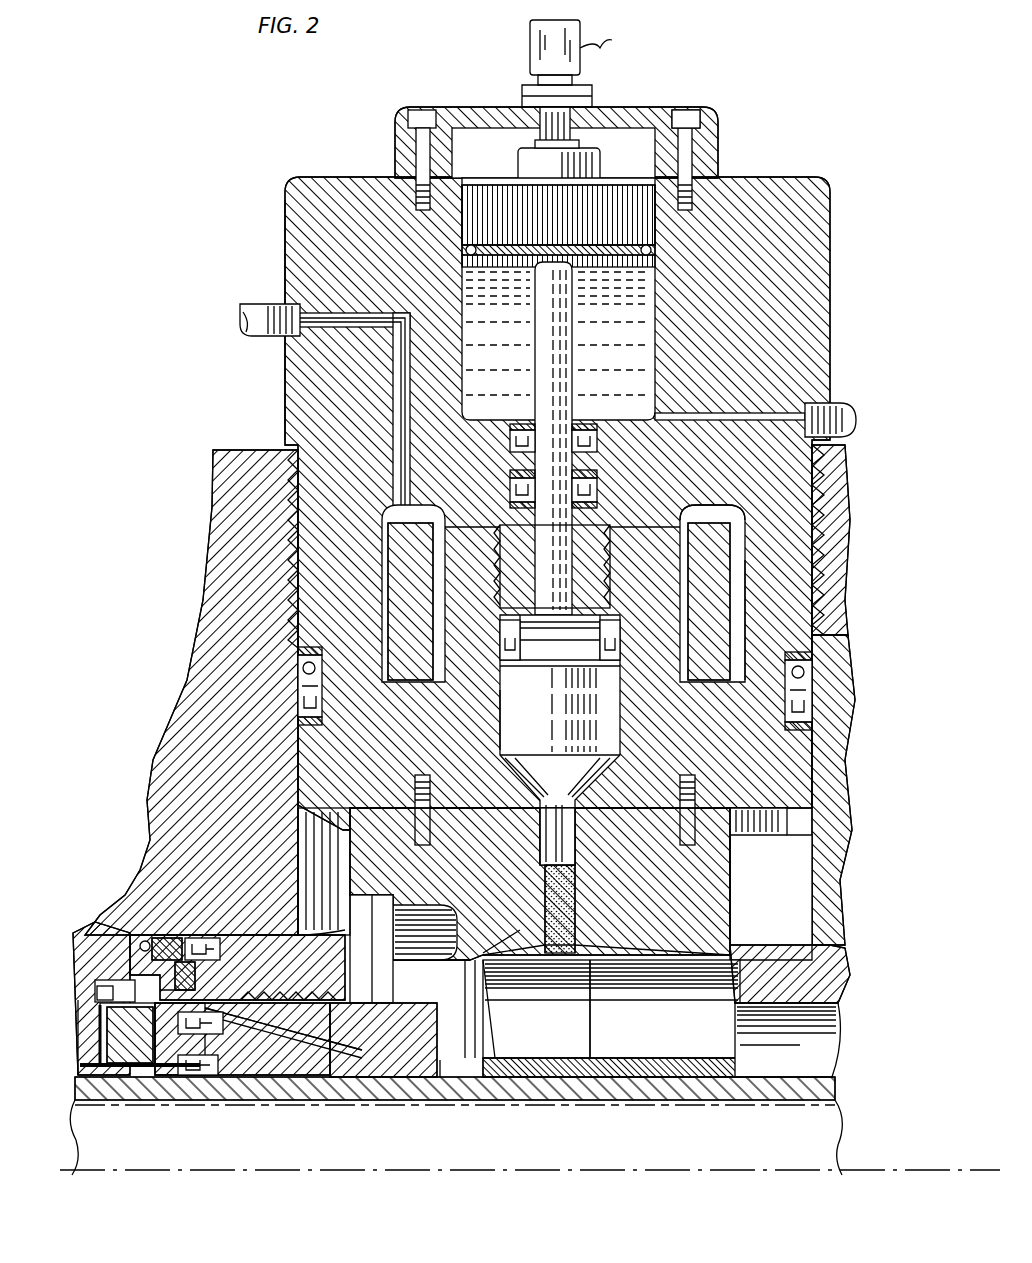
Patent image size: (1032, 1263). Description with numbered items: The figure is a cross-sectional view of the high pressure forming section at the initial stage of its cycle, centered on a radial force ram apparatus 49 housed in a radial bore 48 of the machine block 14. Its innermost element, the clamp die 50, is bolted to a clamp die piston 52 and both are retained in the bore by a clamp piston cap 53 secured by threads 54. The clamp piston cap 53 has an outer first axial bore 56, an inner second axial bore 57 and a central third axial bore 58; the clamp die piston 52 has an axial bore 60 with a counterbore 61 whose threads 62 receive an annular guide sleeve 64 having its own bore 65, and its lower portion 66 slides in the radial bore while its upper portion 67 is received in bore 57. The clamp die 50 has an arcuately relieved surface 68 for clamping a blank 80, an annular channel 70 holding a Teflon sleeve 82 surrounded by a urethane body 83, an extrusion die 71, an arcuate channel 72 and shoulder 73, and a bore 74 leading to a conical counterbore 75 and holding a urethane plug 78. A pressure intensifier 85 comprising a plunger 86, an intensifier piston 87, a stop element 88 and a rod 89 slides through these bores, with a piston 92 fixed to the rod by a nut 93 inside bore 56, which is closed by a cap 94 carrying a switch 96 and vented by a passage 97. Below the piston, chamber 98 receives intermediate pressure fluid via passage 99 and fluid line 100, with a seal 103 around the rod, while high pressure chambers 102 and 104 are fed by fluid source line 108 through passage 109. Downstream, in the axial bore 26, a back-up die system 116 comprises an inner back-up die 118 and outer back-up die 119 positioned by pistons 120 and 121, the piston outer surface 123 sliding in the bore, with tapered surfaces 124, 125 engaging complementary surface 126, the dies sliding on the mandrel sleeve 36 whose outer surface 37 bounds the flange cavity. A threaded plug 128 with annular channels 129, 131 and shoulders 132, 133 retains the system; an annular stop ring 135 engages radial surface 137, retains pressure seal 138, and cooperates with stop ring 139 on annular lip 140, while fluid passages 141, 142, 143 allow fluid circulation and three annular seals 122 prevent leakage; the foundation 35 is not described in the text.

The machine block 14 is at (836, 505).
The axial bore 26 is at (840, 958).
The foundation 35 is at (614, 1154).
The mandrel sleeve 36 is at (835, 1088).
The outer surface of mandrel sleeve 37 is at (440, 1082).
The radial bore 48 is at (814, 880).
The radial force ram apparatus 49 is at (264, 152).
The clamp die 50 is at (712, 926).
The clamp die piston 52 is at (772, 835).
The clamp piston cap 53 is at (292, 246).
The threads 54 is at (295, 448).
The outer first axial bore 56 is at (668, 376).
The inner second axial bore 57 is at (745, 625).
The third axial bore 58 is at (532, 470).
The axial bore 60 is at (505, 685).
The axial counterbore 61 is at (612, 600).
The threads 62 is at (616, 548).
The annular guide sleeve 64 is at (495, 598).
The axial bore of guide sleeve 65 is at (500, 535).
The lower portion of clamp die piston 66 is at (800, 752).
The upper portion of clamp die piston 67 is at (720, 577).
The arcuately relieved surface 68 is at (690, 985).
The annular channel 70 is at (612, 975).
The extrusion die 71 is at (462, 975).
The arcuate channel 72 is at (393, 922).
The shoulder 73 is at (448, 948).
The bore 74 is at (590, 936).
The conical counterbore 75 is at (578, 820).
The plug 78 is at (566, 900).
The blank 80 is at (806, 1075).
The cylindrical sleeve 82 is at (560, 1066).
The cylindrical body 83 is at (505, 955).
The pressure intensifier 85 is at (486, 716).
The plunger 86 is at (548, 830).
The intensifier piston 87 is at (542, 726).
The stop element 88 is at (610, 630).
The rod 89 is at (550, 382).
The piston 92 is at (528, 216).
The nut 93 is at (598, 165).
The cap 94 is at (472, 108).
The switch 96 is at (530, 48).
The passage 97 is at (628, 112).
The chamber 98 is at (622, 358).
The passage 99 is at (805, 415).
The fluid line 100 is at (840, 433).
The first chamber 102 is at (708, 516).
The seal 103 is at (590, 445).
The second chamber 104 is at (806, 702).
The fluid source line 108 is at (245, 338).
The passage 109 is at (330, 326).
The back-up die system 116 is at (227, 969).
The inner back-up die 118 is at (390, 1078).
The outer back-up die 119 is at (368, 1010).
The inner back-up die piston 120 is at (238, 1072).
The outer back-up die piston 121 is at (325, 871).
The annular seals 122 is at (245, 935).
The outer surface 123 is at (262, 932).
The tapered surface 124 is at (352, 1048).
The tapered surface 125 is at (282, 1044).
The complementary tapered surface 126 is at (340, 1046).
The threaded plug 128 is at (73, 940).
The annular channel 129 is at (82, 1005).
The annular channel 131 is at (140, 942).
The radially inner shoulder 132 is at (122, 1070).
The outer shoulder 133 is at (165, 938).
The annular stop ring 135 is at (188, 968).
The radial surface 137 is at (190, 938).
The pressure seal 138 is at (140, 934).
The stop ring 139 is at (95, 992).
The annular lip 140 is at (127, 1034).
The fluid passages 141 is at (100, 1068).
The fluid passages 142 is at (98, 980).
The fluid passages 143 is at (193, 985).